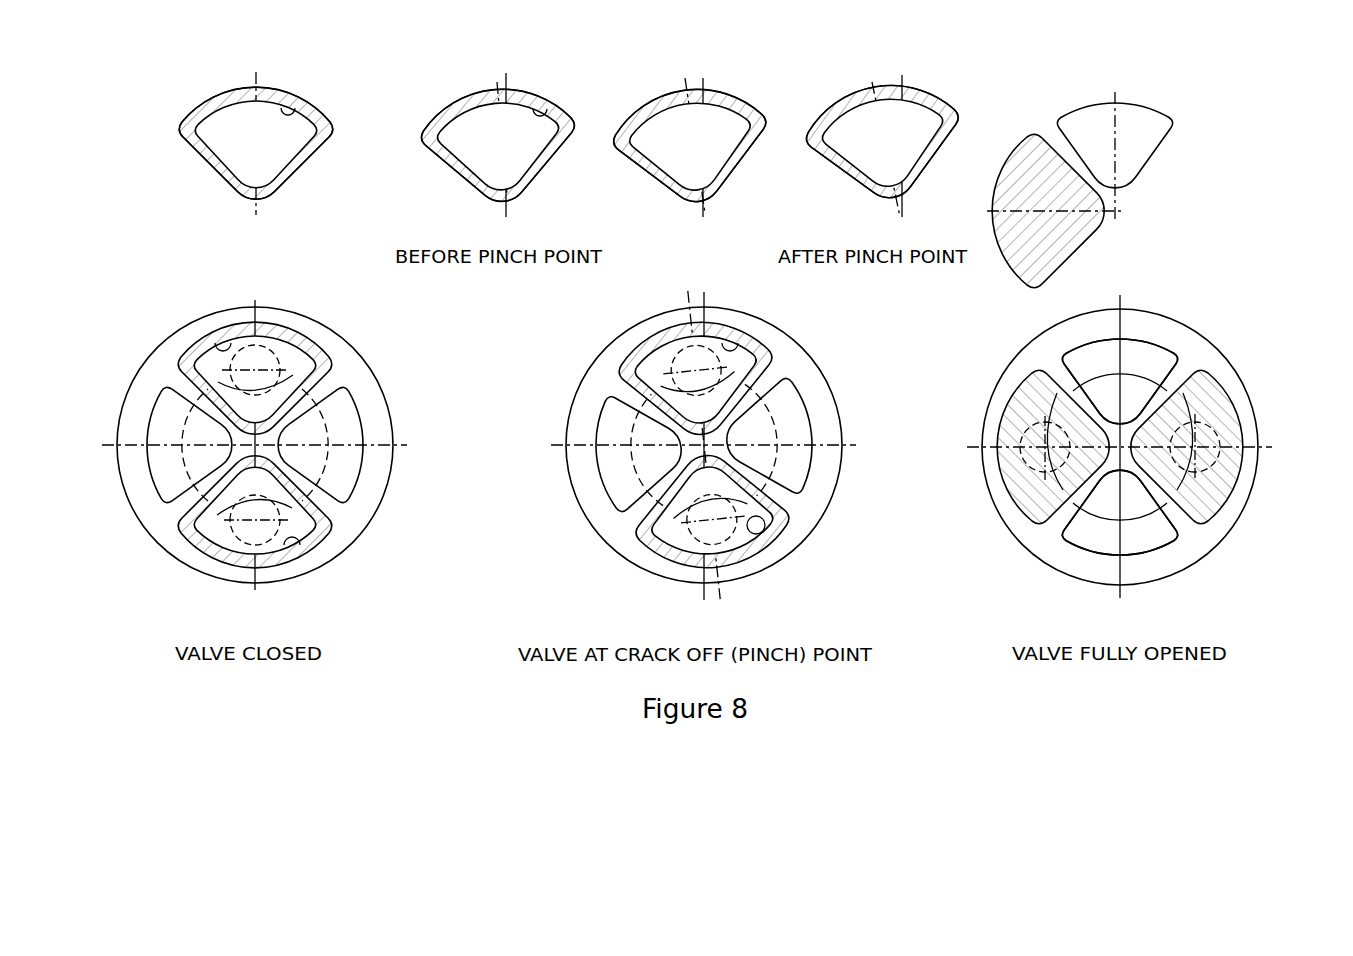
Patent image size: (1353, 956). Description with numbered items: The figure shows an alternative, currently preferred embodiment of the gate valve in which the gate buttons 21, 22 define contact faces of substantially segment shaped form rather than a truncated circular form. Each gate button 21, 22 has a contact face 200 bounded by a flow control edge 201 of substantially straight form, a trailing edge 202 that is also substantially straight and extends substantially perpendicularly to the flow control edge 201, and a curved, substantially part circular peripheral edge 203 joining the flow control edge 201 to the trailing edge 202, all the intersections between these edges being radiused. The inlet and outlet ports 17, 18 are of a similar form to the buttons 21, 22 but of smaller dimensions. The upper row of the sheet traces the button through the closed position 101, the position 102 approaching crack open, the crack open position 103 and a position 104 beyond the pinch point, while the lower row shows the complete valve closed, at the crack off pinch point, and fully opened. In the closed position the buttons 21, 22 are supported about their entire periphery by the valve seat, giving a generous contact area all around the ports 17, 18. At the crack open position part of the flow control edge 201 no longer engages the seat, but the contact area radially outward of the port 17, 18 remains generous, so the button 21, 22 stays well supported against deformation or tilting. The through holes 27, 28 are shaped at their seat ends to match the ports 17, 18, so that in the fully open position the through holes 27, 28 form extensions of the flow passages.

The inlet port 17 is at (291, 108).
The outlet port 18 is at (317, 535).
The gate button 21 is at (203, 153).
The gate button 22 is at (197, 547).
The through hole 27 is at (344, 415).
The through hole 28 is at (162, 432).
The closed position axis 101 is at (249, 130).
The crack open position 102 is at (495, 132).
The crack open position 103 is at (695, 133).
The after pinch point axis 104 is at (887, 133).
The contact face 200 is at (314, 151).
The flow control edge 201 is at (306, 169).
The trailing edge 202 is at (214, 179).
The peripheral edge 203 is at (205, 95).